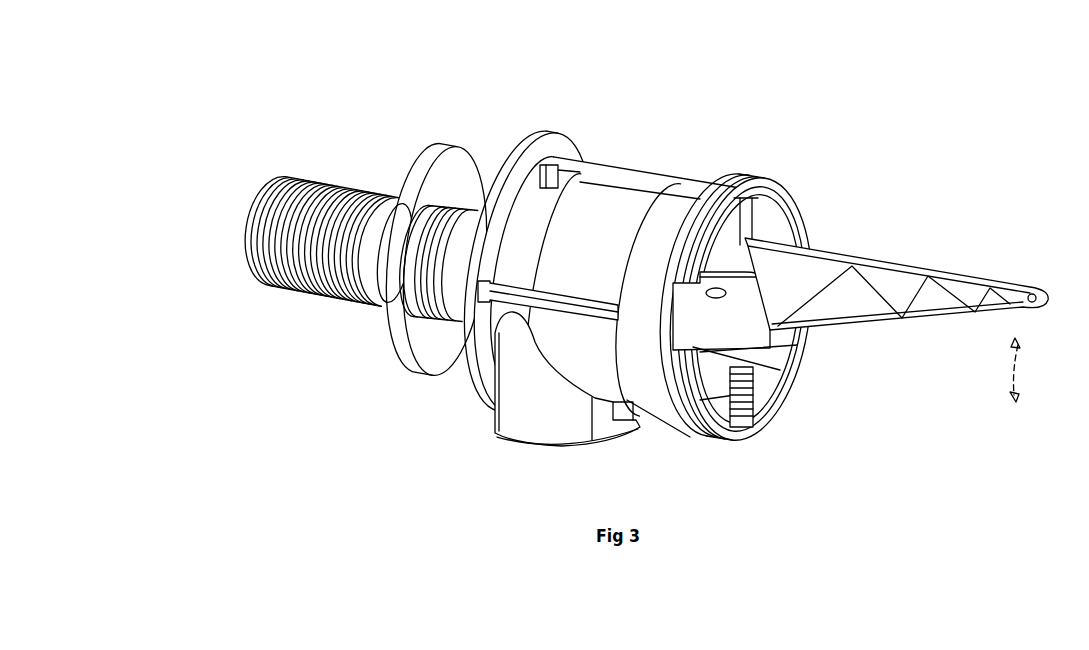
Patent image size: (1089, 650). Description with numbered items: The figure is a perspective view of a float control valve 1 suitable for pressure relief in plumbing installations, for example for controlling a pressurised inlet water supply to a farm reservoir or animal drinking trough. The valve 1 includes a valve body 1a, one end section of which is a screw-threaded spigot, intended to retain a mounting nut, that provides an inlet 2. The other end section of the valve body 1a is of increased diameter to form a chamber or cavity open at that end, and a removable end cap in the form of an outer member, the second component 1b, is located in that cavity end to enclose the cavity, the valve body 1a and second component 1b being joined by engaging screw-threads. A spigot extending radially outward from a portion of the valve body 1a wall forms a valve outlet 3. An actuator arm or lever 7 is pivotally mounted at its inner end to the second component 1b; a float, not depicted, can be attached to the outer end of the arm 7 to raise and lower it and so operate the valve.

The valve 1 is at (552, 150).
The valve body 1a is at (586, 198).
The second component 1b is at (772, 198).
The inlet 2 is at (206, 222).
The valve outlet 3 is at (537, 515).
The actuator arm 7 is at (897, 283).